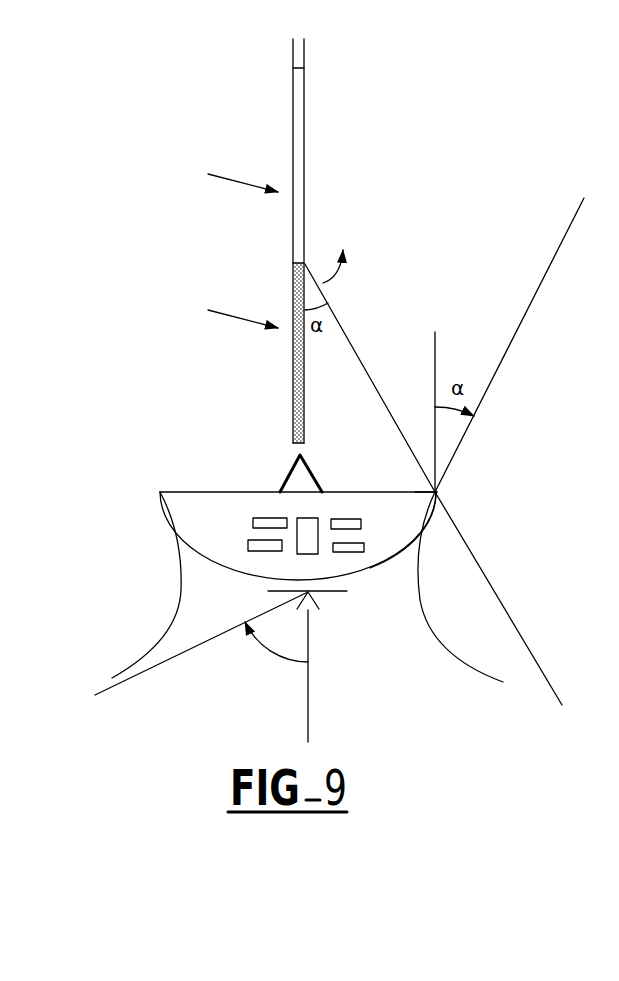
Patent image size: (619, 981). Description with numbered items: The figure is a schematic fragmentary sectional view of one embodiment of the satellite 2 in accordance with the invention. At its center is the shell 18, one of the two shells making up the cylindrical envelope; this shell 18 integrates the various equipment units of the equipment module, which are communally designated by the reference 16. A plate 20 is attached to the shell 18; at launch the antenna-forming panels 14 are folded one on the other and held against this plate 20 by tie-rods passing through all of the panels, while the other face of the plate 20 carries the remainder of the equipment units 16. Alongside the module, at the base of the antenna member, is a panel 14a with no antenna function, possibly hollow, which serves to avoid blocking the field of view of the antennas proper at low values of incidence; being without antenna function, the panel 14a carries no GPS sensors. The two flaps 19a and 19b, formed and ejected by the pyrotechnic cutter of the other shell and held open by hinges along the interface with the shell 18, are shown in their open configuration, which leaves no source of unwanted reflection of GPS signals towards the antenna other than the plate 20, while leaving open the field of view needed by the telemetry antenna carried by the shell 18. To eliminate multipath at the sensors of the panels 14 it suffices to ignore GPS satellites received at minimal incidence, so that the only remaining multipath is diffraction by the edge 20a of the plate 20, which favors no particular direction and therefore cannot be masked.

The lamp housing 2 is at (383, 561).
The panel 14 is at (306, 57).
The panel with no antenna function 14a is at (293, 402).
The equipment units 16 is at (233, 521).
The shell 18 is at (405, 513).
The flap 19a is at (165, 627).
The flap 19b is at (475, 672).
The plate 20 is at (183, 492).
The edge of the plate 20a is at (436, 491).